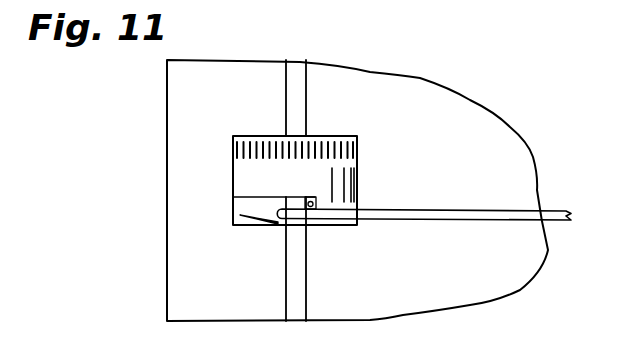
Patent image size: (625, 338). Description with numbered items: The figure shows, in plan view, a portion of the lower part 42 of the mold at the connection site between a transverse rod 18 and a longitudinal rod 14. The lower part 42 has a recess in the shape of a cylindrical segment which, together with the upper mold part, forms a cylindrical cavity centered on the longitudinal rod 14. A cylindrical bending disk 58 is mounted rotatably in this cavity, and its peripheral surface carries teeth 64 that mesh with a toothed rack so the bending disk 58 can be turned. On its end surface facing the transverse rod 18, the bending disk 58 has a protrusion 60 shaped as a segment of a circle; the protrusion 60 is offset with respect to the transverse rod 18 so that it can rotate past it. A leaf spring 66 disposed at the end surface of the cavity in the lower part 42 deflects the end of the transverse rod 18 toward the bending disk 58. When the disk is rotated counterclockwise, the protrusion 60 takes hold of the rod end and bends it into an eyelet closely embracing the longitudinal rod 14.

The lower part of the mold 42 is at (424, 76).
The longitudinal rod 14 is at (298, 293).
The bending disk 58 is at (255, 180).
The teeth 64 is at (355, 149).
The protrusion 60 is at (353, 206).
The transverse rod 18 is at (480, 219).
The leaf spring 66 is at (253, 218).